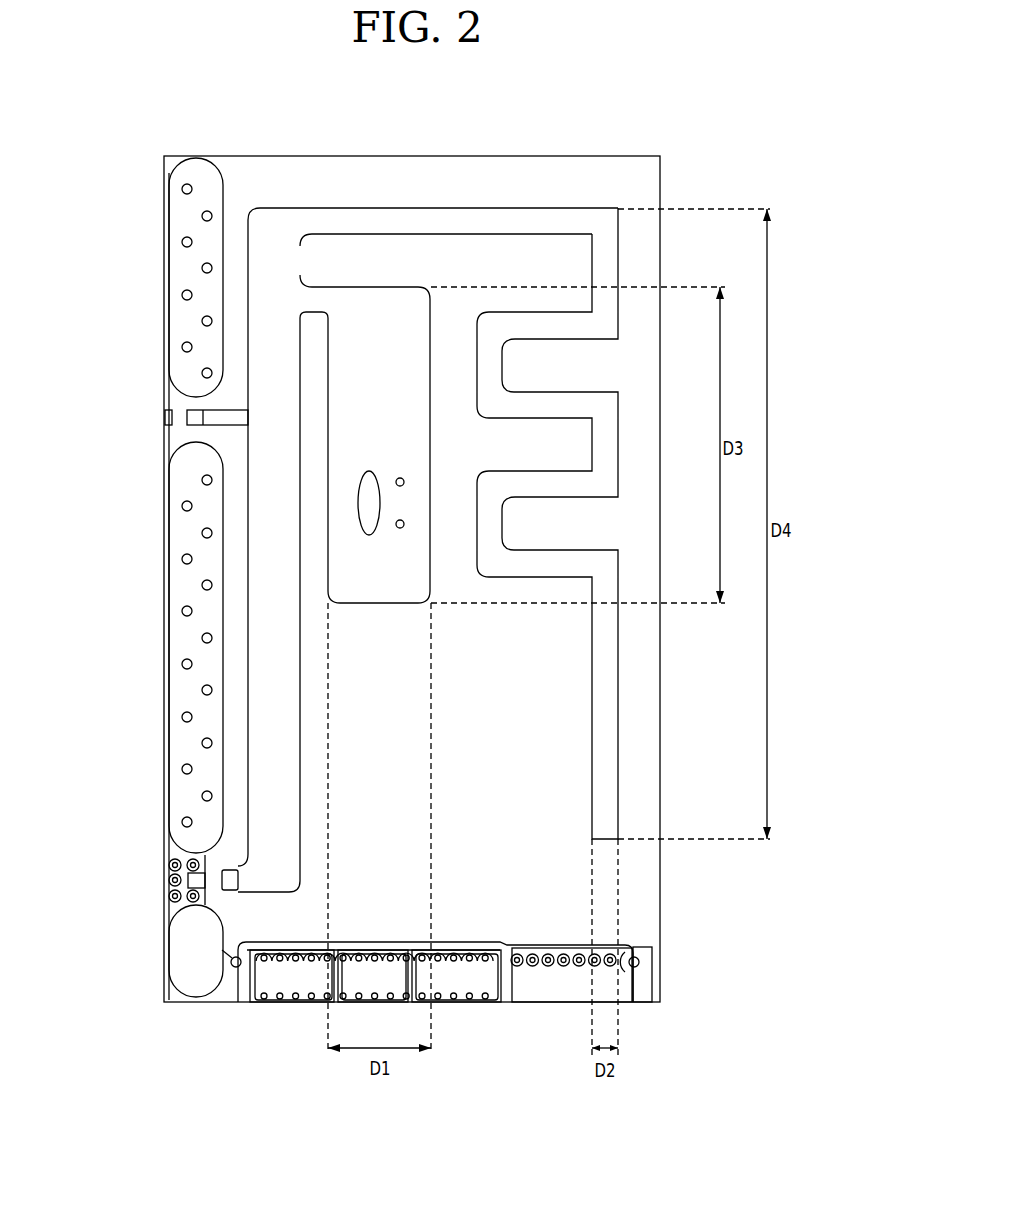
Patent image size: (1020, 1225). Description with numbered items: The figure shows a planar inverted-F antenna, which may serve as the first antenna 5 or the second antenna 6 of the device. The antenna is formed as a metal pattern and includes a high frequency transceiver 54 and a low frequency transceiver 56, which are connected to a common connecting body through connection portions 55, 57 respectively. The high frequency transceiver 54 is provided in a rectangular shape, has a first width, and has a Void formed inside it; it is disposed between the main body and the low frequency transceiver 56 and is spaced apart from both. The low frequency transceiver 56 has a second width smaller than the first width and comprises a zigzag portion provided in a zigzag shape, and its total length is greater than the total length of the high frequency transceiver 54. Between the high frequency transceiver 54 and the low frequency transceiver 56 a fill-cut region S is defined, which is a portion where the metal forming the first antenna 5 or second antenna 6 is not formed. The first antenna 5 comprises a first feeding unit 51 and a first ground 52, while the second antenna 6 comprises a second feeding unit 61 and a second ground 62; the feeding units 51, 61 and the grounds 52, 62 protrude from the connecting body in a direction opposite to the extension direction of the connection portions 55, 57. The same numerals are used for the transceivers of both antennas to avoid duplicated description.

The first antenna 5 is at (426, 518).
The second antenna 6 is at (645, 114).
The first feeding unit 51 is at (163, 394).
The second feeding unit 61 is at (222, 413).
The first ground 52 is at (168, 950).
The second ground 62 is at (228, 884).
The high frequency transceiver 54 is at (403, 575).
The connection portion 55 is at (314, 300).
The low frequency transceiver 56 is at (272, 580).
The connection portion 57 is at (405, 222).
The fill-cut region S is at (466, 359).
The void Void is at (400, 481).